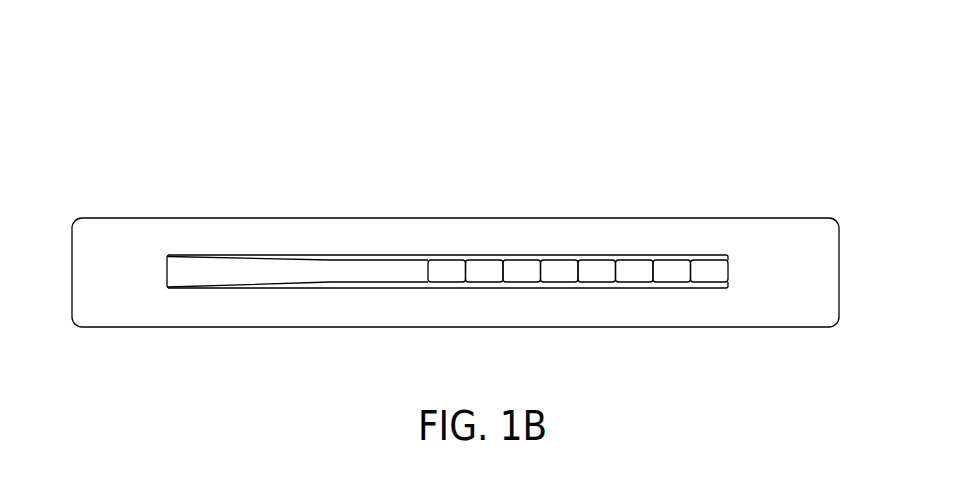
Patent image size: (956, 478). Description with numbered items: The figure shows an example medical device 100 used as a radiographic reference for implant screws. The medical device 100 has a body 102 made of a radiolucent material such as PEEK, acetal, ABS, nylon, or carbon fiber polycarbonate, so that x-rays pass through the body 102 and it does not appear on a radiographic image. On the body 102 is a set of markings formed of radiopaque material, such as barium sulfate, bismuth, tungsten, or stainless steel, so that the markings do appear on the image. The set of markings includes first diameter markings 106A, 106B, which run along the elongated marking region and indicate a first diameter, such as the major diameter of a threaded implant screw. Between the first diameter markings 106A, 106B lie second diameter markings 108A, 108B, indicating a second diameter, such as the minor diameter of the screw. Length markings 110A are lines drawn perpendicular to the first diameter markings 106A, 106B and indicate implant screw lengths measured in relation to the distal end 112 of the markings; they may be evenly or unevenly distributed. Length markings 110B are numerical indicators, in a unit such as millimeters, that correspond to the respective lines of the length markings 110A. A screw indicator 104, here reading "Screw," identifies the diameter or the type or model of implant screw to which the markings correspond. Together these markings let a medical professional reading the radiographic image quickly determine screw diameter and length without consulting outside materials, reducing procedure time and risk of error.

The medical device 100 is at (118, 94).
The body 102 is at (70, 322).
The screw indicator 104 is at (817, 275).
The first diameter marking 106A is at (345, 255).
The first diameter marking 106B is at (312, 290).
The second diameter marking 108A is at (393, 258).
The second diameter marking 108B is at (367, 289).
The length markings 110A is at (541, 282).
The length markings 110B is at (410, 313).
The distal end 112 is at (166, 267).